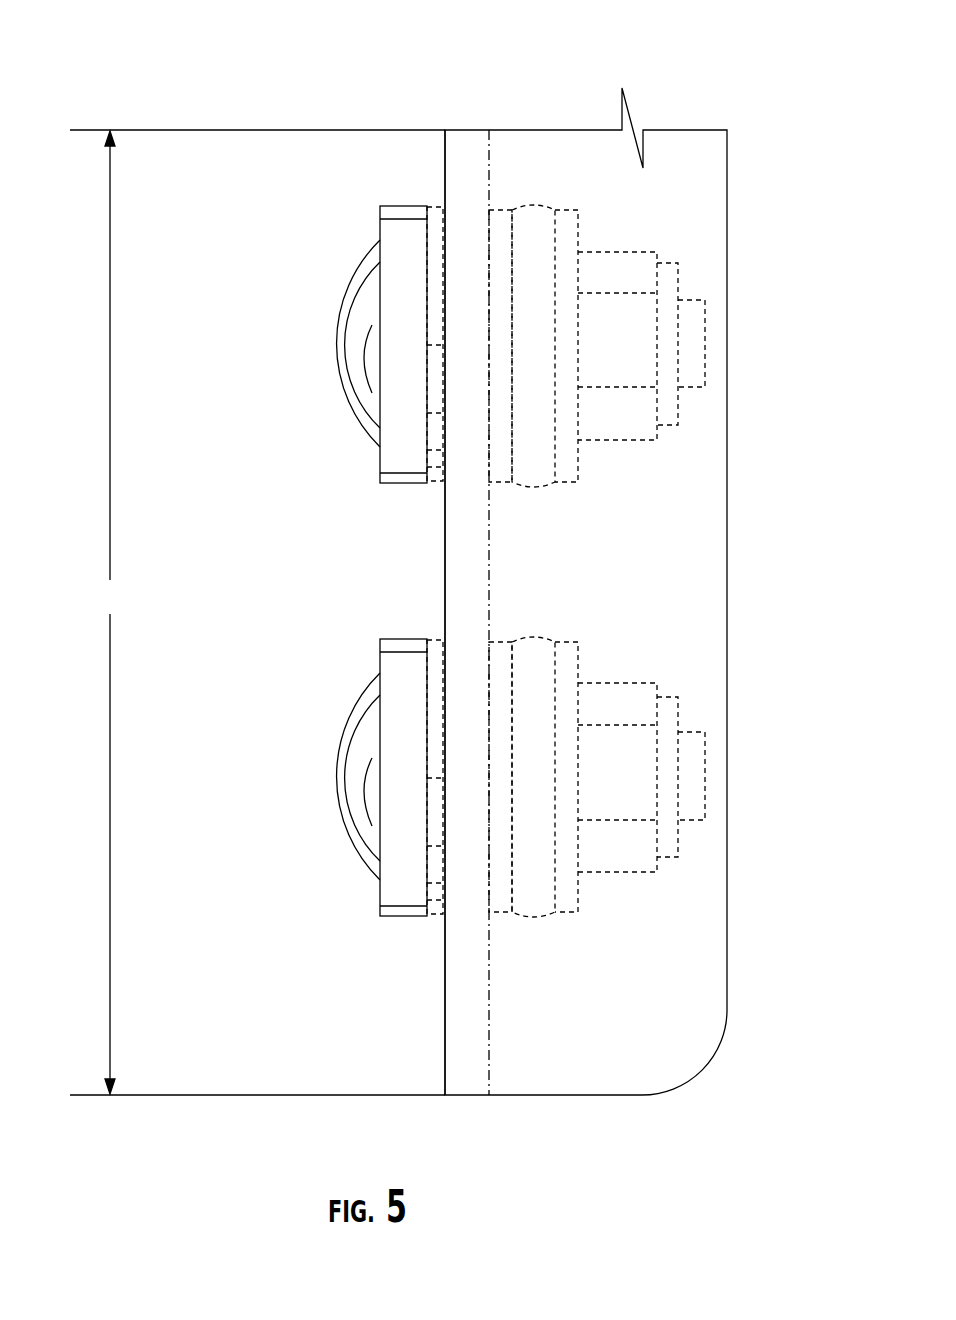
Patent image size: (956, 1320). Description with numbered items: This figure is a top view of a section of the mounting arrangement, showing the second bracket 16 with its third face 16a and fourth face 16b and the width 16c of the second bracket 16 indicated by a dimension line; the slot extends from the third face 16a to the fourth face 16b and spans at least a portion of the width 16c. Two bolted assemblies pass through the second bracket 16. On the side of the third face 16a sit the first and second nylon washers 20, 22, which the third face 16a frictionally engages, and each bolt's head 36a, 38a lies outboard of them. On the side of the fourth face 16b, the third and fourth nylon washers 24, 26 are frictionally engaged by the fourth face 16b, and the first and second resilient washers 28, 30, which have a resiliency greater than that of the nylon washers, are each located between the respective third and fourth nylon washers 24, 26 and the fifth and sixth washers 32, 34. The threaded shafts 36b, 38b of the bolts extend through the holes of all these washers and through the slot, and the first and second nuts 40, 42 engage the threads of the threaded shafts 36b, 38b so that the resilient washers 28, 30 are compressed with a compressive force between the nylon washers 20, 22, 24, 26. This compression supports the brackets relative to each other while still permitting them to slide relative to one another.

The second bracket 16 is at (470, 550).
The third face 16a is at (445, 598).
The fourth face 16b is at (488, 509).
The width 16c is at (257, 612).
The first nylon washer 20 is at (435, 890).
The second nylon washer 22 is at (437, 217).
The third nylon washer 24 is at (497, 900).
The fourth nylon washer 26 is at (497, 230).
The first resilient washer 28 is at (527, 903).
The second resilient washer 30 is at (538, 222).
The fifth washer 32 is at (568, 887).
The sixth washer 34 is at (570, 228).
The head 36a is at (357, 788).
The threaded shaft 36b is at (692, 760).
The head 38a is at (357, 354).
The threaded shaft 38b is at (695, 318).
The first nut 40 is at (612, 723).
The second nut 42 is at (613, 413).